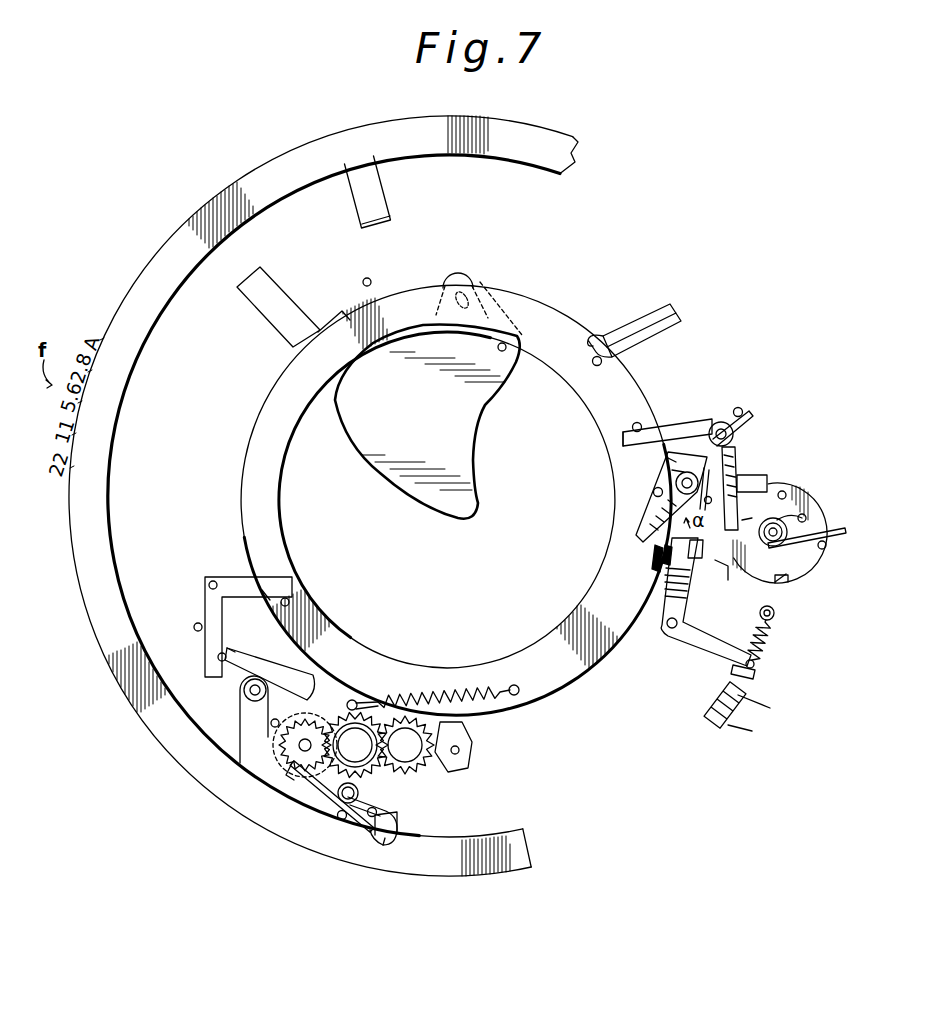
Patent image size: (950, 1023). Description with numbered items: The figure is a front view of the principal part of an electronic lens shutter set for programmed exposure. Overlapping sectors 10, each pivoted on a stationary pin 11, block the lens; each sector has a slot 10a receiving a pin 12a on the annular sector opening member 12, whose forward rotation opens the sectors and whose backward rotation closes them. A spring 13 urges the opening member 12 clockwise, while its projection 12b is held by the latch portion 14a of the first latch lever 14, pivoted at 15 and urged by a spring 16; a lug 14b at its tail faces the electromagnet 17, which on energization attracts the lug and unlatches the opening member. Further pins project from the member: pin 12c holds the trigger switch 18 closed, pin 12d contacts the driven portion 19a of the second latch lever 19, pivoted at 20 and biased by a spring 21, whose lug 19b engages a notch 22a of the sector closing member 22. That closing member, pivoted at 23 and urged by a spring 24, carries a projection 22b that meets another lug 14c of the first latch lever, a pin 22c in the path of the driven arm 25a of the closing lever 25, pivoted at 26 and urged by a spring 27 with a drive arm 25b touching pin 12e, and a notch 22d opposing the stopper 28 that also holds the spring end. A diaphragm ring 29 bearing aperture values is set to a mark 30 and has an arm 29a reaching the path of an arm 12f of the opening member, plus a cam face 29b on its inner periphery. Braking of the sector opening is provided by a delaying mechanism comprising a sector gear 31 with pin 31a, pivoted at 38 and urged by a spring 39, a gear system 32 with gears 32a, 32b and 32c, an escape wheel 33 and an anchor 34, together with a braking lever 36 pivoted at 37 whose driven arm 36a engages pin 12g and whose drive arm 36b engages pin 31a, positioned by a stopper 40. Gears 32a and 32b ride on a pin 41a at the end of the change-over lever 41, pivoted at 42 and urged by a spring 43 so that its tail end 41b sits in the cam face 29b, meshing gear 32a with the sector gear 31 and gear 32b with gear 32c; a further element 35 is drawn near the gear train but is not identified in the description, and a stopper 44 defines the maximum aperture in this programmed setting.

The sector 10 is at (470, 451).
The slot 10a is at (483, 290).
The pin 11 is at (507, 351).
The sector opening member 12 is at (265, 408).
The pin 12a is at (458, 282).
The projection 12b is at (655, 550).
The pin 12c is at (594, 367).
The pin 12d is at (653, 492).
The pin 12e is at (632, 428).
The arm 12f is at (262, 290).
The pin 12g is at (278, 606).
The spring 13 is at (492, 700).
The first latch lever 14 is at (702, 650).
The latch portion 14a is at (662, 570).
The lug 14b is at (755, 679).
The lug 14c is at (698, 570).
The pivot 15 is at (668, 630).
The spring 16 is at (765, 632).
The electromagnet 17 is at (715, 726).
The trigger switch 18 is at (606, 328).
The second latch lever 19 is at (748, 470).
The driven portion 19a is at (638, 530).
The lug 19b is at (764, 476).
The pivot 20 is at (668, 460).
The spring 21 is at (700, 466).
The sector closing member 22 is at (800, 566).
The notch 22a is at (788, 492).
The projection 22b is at (728, 568).
The pin 22c is at (808, 514).
The notch 22d is at (782, 584).
The pivot 23 is at (770, 544).
The spring 24 is at (845, 515).
The closing lever 25 is at (672, 426).
The driven arm 25a is at (745, 520).
The drive arm 25b is at (624, 441).
The pivot 26 is at (718, 421).
The spring 27 is at (744, 407).
The stopper 28 is at (826, 547).
The diaphragm ring 29 is at (282, 165).
The arm 29a is at (388, 232).
The cam face 29b is at (380, 845).
The mark 30 is at (102, 347).
The sector gear 31 is at (240, 690).
The pin 31a is at (234, 650).
The gear system 32 is at (379, 779).
The gear 32a is at (300, 775).
The gear 32b is at (350, 724).
The gear 32c is at (382, 700).
The escape wheel 33 is at (422, 772).
The anchor 34 is at (464, 766).
The pivot 35 is at (317, 806).
The braking lever 36 is at (236, 576).
The driven arm 36a is at (292, 600).
The drive arm 36b is at (216, 659).
The pivot 37 is at (208, 585).
The pivot 38 is at (266, 690).
The spring 39 is at (238, 740).
The stopper 40 is at (193, 628).
The change-over lever 41 is at (392, 810).
The pin 41a is at (292, 775).
The tail end 41b is at (388, 846).
The pivot 42 is at (343, 821).
The spring 43 is at (378, 815).
The stopper 44 is at (365, 278).